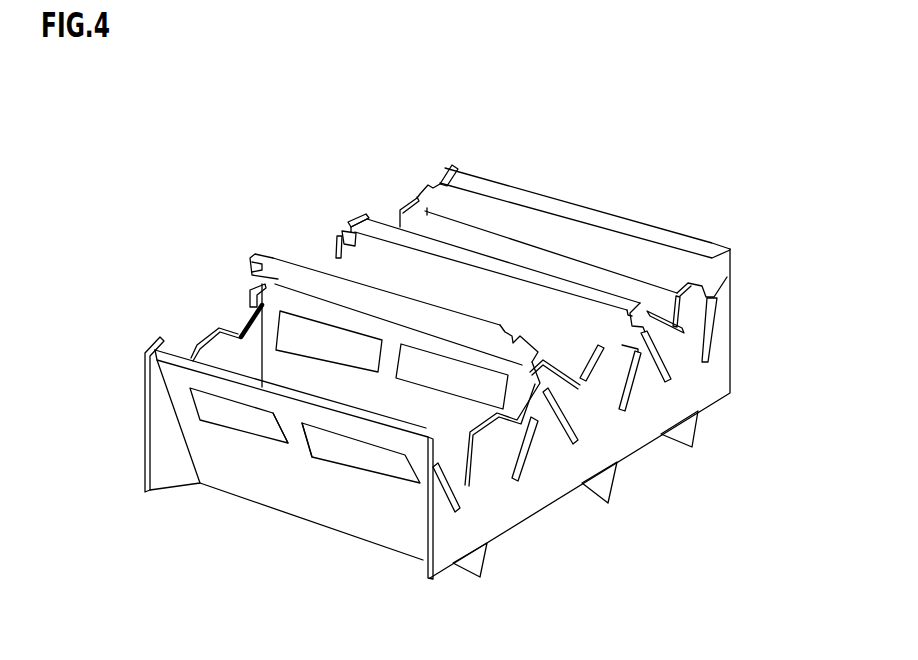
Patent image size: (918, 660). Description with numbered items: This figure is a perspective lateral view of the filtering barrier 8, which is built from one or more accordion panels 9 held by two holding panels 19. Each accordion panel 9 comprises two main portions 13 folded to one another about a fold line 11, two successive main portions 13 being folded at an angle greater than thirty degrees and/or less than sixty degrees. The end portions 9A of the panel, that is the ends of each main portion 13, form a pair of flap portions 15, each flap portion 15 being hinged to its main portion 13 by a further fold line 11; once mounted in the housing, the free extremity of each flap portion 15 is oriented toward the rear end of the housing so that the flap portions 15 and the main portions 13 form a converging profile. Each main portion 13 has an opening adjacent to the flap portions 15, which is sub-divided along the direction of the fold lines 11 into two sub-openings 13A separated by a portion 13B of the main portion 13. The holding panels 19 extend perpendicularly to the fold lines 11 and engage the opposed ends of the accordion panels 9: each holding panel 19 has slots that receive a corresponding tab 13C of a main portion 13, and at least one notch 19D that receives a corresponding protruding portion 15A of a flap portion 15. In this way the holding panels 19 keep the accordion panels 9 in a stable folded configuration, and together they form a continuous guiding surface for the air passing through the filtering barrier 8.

The filtering barrier 8 is at (720, 138).
The accordion panel 9 is at (350, 535).
The end portion 9A is at (278, 290).
The fold line 11 is at (368, 226).
The main portion 13 is at (395, 408).
The sub-opening 13A is at (198, 398).
The portion 13B is at (294, 434).
The tab 13C is at (707, 367).
The flap portion 15 is at (468, 208).
The protruding portion 15A is at (713, 287).
The holding panel 19 is at (143, 481).
The notch 19D is at (533, 412).